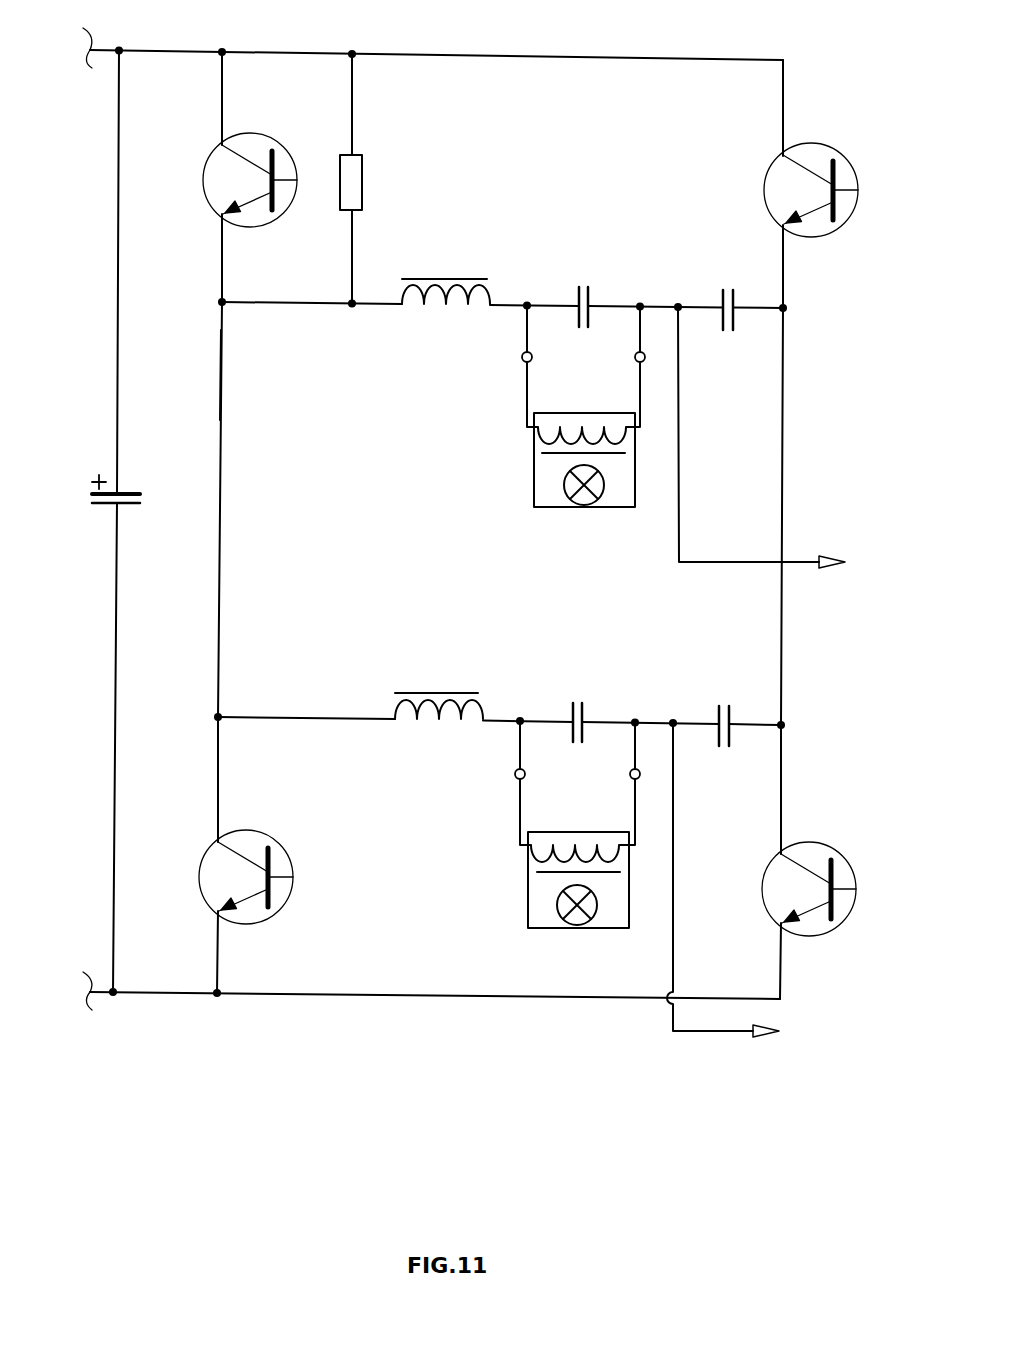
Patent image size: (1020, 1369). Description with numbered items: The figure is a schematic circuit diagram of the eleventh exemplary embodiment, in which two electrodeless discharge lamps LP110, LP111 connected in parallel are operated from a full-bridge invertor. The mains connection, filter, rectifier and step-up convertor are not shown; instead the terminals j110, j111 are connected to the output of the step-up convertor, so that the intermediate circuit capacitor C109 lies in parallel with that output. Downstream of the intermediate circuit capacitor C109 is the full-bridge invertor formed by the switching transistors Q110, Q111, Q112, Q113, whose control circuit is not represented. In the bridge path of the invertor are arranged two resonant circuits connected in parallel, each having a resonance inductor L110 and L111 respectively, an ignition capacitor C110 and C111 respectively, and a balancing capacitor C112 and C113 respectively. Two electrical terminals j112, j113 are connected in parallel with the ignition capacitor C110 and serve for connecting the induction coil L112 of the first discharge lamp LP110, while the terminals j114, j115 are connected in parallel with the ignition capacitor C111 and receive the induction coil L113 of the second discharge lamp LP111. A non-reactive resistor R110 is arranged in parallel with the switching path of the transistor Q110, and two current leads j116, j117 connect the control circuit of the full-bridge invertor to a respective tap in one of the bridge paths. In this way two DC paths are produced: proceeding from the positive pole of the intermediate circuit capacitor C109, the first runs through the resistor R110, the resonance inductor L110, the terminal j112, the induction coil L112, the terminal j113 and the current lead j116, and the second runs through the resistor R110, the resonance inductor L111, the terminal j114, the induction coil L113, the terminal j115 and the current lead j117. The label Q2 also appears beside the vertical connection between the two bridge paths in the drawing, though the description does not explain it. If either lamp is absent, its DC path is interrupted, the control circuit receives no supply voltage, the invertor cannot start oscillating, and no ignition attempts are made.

The terminal j110 is at (88, 34).
The terminal j111 is at (91, 1006).
The switching transistor Q110 is at (252, 165).
The switching transistor Q111 is at (812, 177).
The switching transistor Q112 is at (247, 863).
The switching transistor Q113 is at (809, 873).
The non-reactive resistor R110 is at (383, 179).
The intermediate circuit capacitor C109 is at (138, 482).
The node Q2 is at (248, 375).
The resonance inductor L110 is at (446, 279).
The resonance inductor L111 is at (439, 692).
The induction coil L112 is at (537, 438).
The induction coil L113 is at (530, 860).
The ignition capacitor C110 is at (584, 292).
The ignition capacitor C111 is at (580, 708).
The balancing capacitor C112 is at (733, 294).
The balancing capacitor C113 is at (721, 712).
The electrical terminal j112 is at (502, 338).
The electrical terminal j113 is at (615, 339).
The electrical terminal j114 is at (494, 754).
The electrical terminal j115 is at (609, 755).
The current lead j116 is at (790, 442).
The current lead j117 is at (750, 885).
The electrodeless discharge lamp LP110 is at (584, 475).
The electrodeless discharge lamp LP111 is at (578, 896).